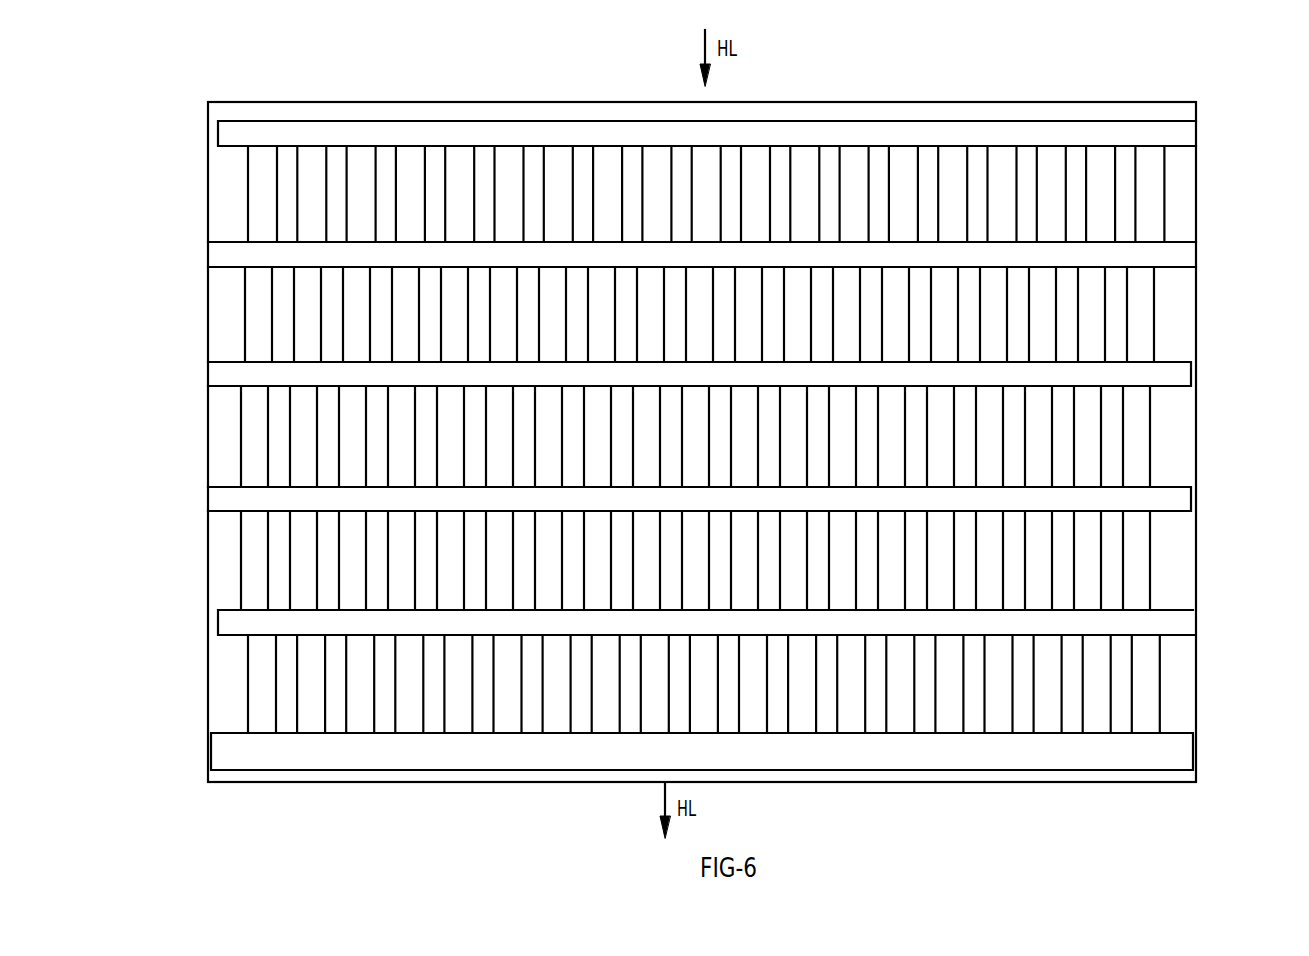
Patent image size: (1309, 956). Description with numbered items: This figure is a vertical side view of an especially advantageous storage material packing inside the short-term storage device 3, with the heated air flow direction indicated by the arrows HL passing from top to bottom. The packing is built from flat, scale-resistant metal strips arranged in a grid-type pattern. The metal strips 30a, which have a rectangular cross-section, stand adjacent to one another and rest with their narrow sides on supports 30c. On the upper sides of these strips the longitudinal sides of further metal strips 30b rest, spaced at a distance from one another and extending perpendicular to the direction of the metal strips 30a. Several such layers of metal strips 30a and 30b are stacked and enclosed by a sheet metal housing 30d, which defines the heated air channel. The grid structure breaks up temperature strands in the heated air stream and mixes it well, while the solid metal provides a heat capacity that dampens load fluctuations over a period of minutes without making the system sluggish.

The short-term storage device 3 is at (699, 474).
The metal strips 30a is at (602, 725).
The metal strips 30b is at (220, 375).
The supports 30c is at (1070, 758).
The sheet metal housing 30d is at (208, 223).